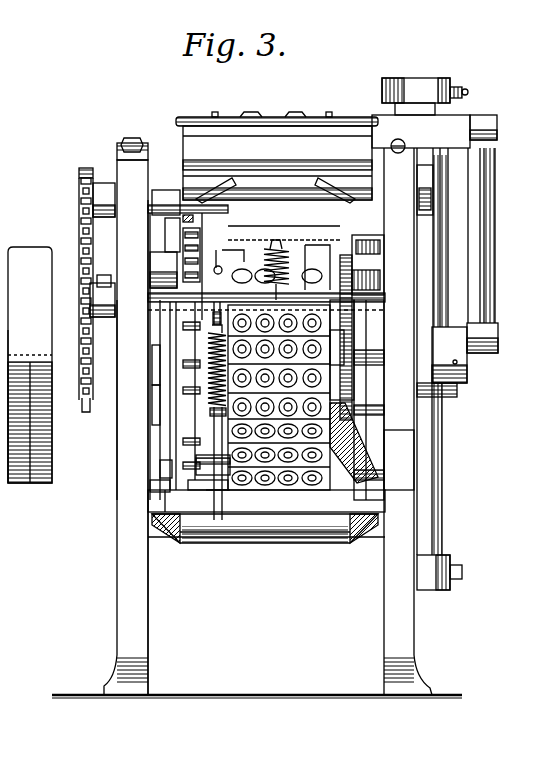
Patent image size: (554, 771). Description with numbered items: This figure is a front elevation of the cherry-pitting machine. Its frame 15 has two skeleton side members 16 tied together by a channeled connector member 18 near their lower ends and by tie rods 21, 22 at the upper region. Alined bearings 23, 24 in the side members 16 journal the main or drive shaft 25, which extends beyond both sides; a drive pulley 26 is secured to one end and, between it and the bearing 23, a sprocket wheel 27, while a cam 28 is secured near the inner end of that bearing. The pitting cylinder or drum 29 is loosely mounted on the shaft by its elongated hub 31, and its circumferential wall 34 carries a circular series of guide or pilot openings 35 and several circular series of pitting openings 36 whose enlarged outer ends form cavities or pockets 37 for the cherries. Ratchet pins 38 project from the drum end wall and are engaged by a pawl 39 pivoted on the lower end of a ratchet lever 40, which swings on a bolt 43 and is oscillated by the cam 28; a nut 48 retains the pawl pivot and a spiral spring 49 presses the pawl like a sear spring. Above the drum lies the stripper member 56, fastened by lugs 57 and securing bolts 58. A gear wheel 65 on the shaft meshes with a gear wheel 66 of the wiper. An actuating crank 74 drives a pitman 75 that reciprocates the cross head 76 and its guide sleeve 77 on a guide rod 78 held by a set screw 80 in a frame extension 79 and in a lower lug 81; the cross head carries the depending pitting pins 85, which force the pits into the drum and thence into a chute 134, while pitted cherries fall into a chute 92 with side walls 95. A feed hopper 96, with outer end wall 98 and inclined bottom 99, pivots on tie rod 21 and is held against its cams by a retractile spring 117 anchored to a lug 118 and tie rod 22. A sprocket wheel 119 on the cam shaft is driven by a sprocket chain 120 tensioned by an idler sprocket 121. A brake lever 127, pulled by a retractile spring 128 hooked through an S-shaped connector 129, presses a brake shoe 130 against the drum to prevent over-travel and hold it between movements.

The frame 15 is at (117, 553).
The side members 16 is at (140, 558).
The channeled connector member 18 is at (308, 510).
The tie rod 21 is at (305, 222).
The tie rod 22 is at (306, 288).
The bearing 23 is at (152, 362).
The bearing 24 is at (378, 365).
The main or drive shaft 25 is at (153, 388).
The drive pulley 26 is at (52, 440).
The sprocket wheel 27 is at (90, 412).
The cam 28 is at (207, 397).
The pitting cylinder or drum 29 is at (337, 480).
The hub 31 is at (190, 347).
The circumferential wall 34 is at (315, 360).
The guide or pilot openings 35 is at (224, 265).
The pitting openings 36 is at (243, 460).
The cavities or pockets 37 is at (288, 470).
The ratchet pins 38 is at (205, 228).
The pawl 39 is at (150, 500).
The ratchet lever 40 is at (196, 430).
The bolt 43 is at (100, 280).
The nut 48 is at (205, 475).
The spiral spring 49 is at (178, 483).
The stripper member 56 is at (176, 205).
The fastening lugs 57 is at (152, 235).
The securing bolts 58 is at (170, 252).
The gear wheel 65 is at (330, 403).
The gear wheel 66 is at (347, 248).
The actuating crank 74 is at (470, 378).
The pitman 75 is at (482, 266).
The cross head 76 is at (434, 134).
The guide sleeve 77 is at (440, 232).
The guide rod 78 is at (444, 487).
The extension 79 is at (415, 86).
The set screw 80 is at (470, 88).
The lug 81 is at (446, 556).
The pitting pins 85 is at (244, 114).
The chute 92 is at (255, 540).
The side walls 95 is at (265, 520).
The feed hopper 96 is at (182, 120).
The outer end wall 98 is at (198, 132).
The inclined bottom 99 is at (277, 168).
The retractile spring 117 is at (272, 240).
The lug 118 is at (278, 196).
The sprocket wheel 119 is at (85, 168).
The sprocket chain 120 is at (79, 232).
The idler sprocket 121 is at (82, 299).
The brake lever 127 is at (217, 478).
The retractile spring 128 is at (212, 330).
The S-shaped connector 129 is at (160, 297).
The brake shoe 130 is at (215, 467).
The chute 134 is at (384, 452).